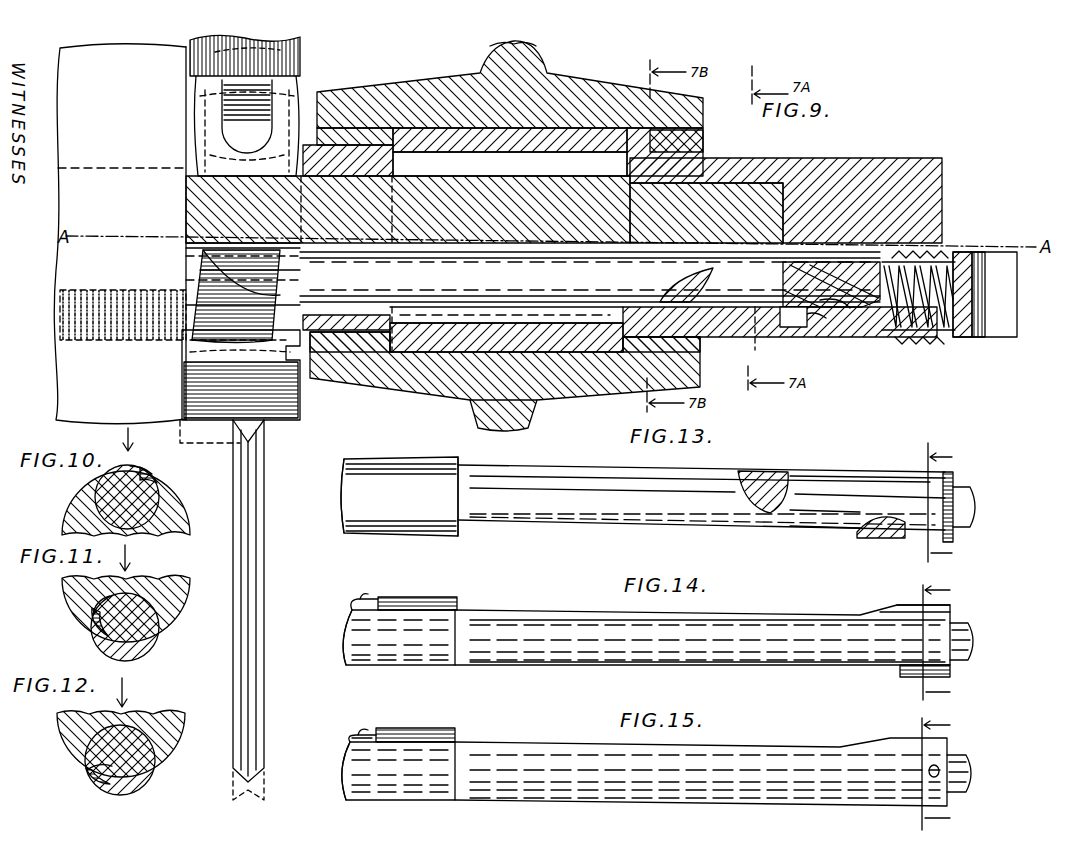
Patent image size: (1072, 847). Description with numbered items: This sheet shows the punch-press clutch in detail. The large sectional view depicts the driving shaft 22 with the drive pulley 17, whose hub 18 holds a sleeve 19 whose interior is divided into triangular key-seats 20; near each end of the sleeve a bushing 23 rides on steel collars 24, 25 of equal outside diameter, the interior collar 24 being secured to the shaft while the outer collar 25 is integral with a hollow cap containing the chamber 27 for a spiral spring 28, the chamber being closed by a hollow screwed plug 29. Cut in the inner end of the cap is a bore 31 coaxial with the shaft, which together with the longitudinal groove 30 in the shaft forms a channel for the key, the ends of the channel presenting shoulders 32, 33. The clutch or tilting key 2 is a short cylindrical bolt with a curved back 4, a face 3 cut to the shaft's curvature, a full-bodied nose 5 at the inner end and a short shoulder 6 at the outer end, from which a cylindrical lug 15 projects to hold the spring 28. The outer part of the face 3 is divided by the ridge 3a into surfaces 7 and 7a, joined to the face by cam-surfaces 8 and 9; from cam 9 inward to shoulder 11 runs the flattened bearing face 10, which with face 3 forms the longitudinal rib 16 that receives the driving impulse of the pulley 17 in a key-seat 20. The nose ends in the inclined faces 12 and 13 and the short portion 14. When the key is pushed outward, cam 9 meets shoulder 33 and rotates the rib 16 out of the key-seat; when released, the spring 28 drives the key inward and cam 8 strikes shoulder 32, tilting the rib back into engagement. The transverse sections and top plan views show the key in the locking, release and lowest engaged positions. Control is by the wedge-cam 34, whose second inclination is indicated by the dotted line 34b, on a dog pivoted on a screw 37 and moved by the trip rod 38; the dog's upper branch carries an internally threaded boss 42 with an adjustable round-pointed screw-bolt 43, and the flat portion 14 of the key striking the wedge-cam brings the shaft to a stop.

In FIG. 13, the clutch or tilting key 2 is at (830, 470).
In FIG. 13, the face 3 is at (701, 497).
In FIG. 13, the ridge 3a is at (824, 505).
In FIG. 14, the back 4 is at (702, 635).
In FIG. 15, the back 4 is at (701, 772).
In FIG. 13, the full-bodied nose 5 is at (399, 496).
In FIG. 14, the full-bodied nose 5 is at (399, 637).
In FIG. 15, the full-bodied nose 5 is at (398, 771).
In FIG. 9, the short shoulder 6 is at (860, 330).
In FIG. 14, the short shoulder 6 is at (945, 616).
In FIG. 10, the surface 7 is at (127, 497).
In FIG. 11, the surface 7 is at (125, 627).
In FIG. 12, the surface 7 is at (145, 777).
In FIG. 13, the surface 7 is at (870, 493).
In FIG. 13, the surface 7a is at (825, 528).
In FIG. 9, the cam-surface 8 is at (813, 317).
In FIG. 13, the cam-surface 8 is at (880, 540).
In FIG. 15, the cam-surface 8 is at (933, 771).
In FIG. 9, the cam-surface 9 is at (688, 286).
In FIG. 13, the cam-surface 9 is at (762, 482).
In FIG. 10, the flattened bearing face or fin 10 is at (150, 470).
In FIG. 11, the flattened bearing face or fin 10 is at (92, 613).
In FIG. 12, the flattened bearing face or fin 10 is at (96, 775).
In FIG. 13, the flattened bearing face or fin 10 is at (575, 475).
In FIG. 14, the flattened bearing face or fin 10 is at (645, 668).
In FIG. 13, the shoulder 11 is at (462, 466).
In FIG. 14, the shoulder 11 is at (460, 604).
In FIG. 15, the shoulder 11 is at (458, 733).
In FIG. 9, the short face 12 is at (200, 270).
In FIG. 13, the short face 12 is at (341, 494).
In FIG. 14, the short face 12 is at (341, 642).
In FIG. 9, the short face 13 is at (200, 250).
In FIG. 14, the short face 13 is at (352, 610).
In FIG. 15, the short face 13 is at (350, 742).
In FIG. 14, the short portion 14 is at (364, 598).
In FIG. 15, the short portion 14 is at (364, 735).
In FIG. 13, the cylindrical lug 15 is at (975, 503).
In FIG. 14, the cylindrical lug 15 is at (974, 640).
In FIG. 15, the cylindrical lug 15 is at (974, 774).
In FIG. 9, the longitudinal rib 16 is at (541, 298).
In FIG. 10, the longitudinal rib 16 is at (157, 480).
In FIG. 11, the longitudinal rib 16 is at (98, 633).
In FIG. 12, the longitudinal rib 16 is at (118, 785).
In FIG. 13, the longitudinal rib 16 is at (664, 482).
In FIG. 14, the longitudinal rib 16 is at (572, 668).
In FIG. 9, the pulley 17 is at (540, 52).
In FIG. 9, the hub 18 is at (395, 94).
In FIG. 9, the sleeve 19 is at (578, 380).
In FIG. 9, the key-seats or pockets 20 is at (520, 154).
In FIG. 9, the driving shaft 22 is at (205, 205).
In FIG. 10, the driving shaft 22 is at (80, 503).
In FIG. 11, the driving shaft 22 is at (150, 585).
In FIG. 12, the driving shaft 22 is at (148, 722).
In FIG. 9, the bearing-bushing 23 is at (320, 135).
In FIG. 9, the interior collar 24 is at (393, 165).
In FIG. 9, the outer collar 25 is at (740, 178).
In FIG. 9, the housing or chamber 27 is at (915, 334).
In FIG. 9, the spiral spring 28 is at (937, 255).
In FIG. 9, the screwed plug 29 is at (985, 294).
In FIG. 9, the longitudinal groove or trough 30 is at (430, 315).
In FIG. 9, the bore 31 is at (830, 340).
In FIG. 9, the shoulder 32 is at (792, 330).
In FIG. 9, the shoulder 33 is at (605, 313).
In FIG. 9, the wedge-cam 34 is at (246, 300).
In FIG. 9, the dotted line 34b is at (200, 340).
In FIG. 9, the full-bodied screw 37 is at (300, 418).
In FIG. 9, the trip rod 38 is at (265, 572).
In FIG. 9, the internally threaded boss 42 is at (300, 56).
In FIG. 9, the round-pointed screw-bolt 43 is at (232, 128).